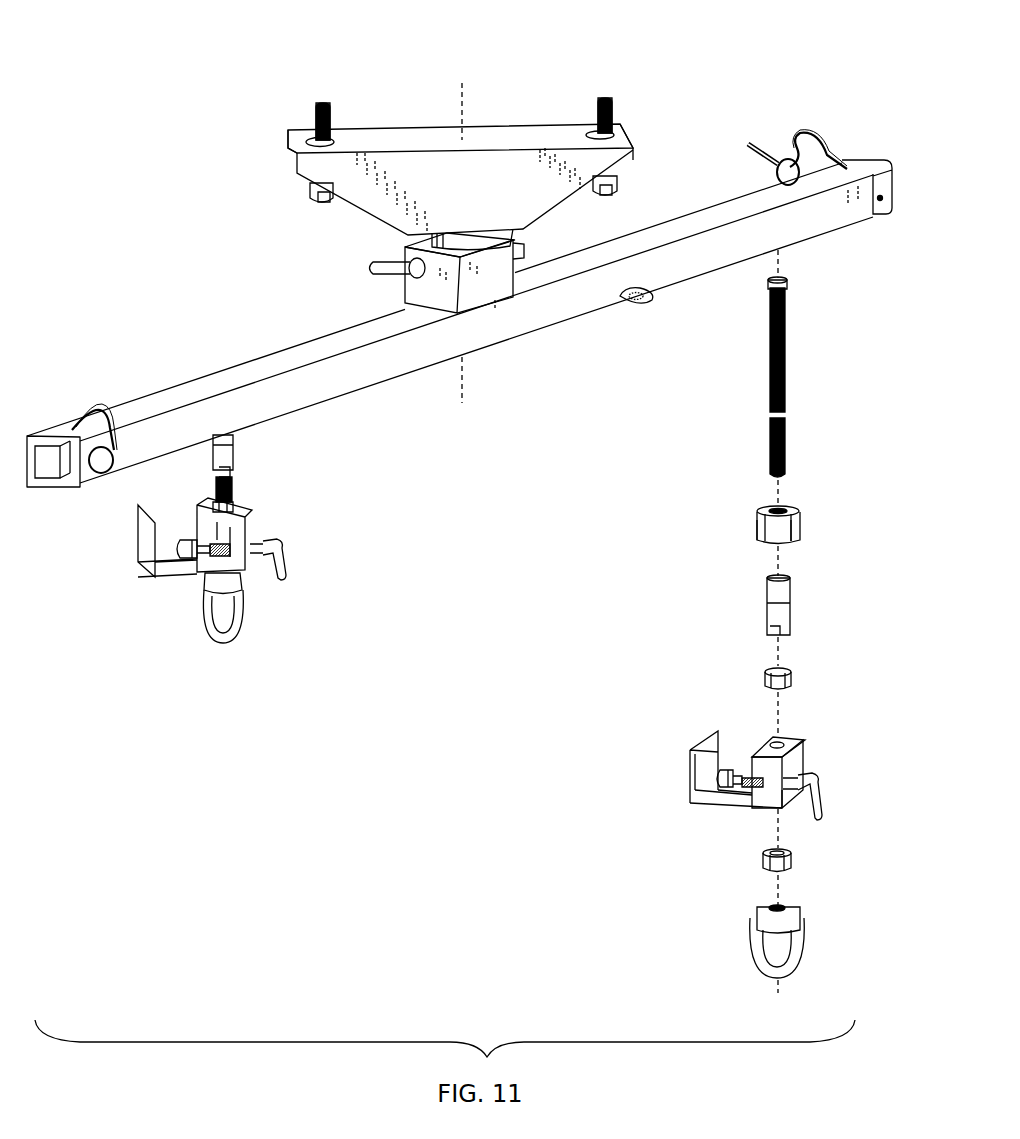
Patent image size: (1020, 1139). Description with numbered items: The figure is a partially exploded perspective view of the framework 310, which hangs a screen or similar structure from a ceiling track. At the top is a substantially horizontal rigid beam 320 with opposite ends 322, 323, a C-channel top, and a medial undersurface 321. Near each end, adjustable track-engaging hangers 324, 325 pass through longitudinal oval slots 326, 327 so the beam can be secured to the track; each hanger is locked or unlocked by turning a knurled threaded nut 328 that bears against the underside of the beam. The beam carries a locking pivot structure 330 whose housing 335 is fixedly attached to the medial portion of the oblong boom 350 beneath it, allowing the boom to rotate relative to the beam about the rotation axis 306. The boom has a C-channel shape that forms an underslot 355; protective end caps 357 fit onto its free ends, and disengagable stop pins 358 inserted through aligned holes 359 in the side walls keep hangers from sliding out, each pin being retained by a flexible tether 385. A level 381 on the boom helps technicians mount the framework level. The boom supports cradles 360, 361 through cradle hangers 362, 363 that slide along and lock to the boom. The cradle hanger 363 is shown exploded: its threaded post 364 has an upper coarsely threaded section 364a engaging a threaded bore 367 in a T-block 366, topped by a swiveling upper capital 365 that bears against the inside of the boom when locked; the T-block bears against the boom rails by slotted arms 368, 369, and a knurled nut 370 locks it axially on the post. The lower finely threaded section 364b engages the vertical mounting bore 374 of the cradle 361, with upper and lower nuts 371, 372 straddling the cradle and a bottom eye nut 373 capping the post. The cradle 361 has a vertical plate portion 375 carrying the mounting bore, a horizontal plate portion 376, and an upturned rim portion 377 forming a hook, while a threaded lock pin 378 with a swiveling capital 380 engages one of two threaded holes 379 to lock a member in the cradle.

The framework 310 is at (72, 142).
The rotation axis 306 is at (458, 90).
The beam 320 is at (460, 237).
The medial undersurface 321 is at (462, 230).
The end 322 is at (290, 146).
The end 323 is at (636, 146).
The track-engaging hanger 324 is at (333, 108).
The track-engaging hanger 325 is at (614, 104).
The oval slot 326 is at (306, 131).
The oval slot 327 is at (604, 124).
The knurled threaded nut 328 is at (308, 196).
The locking pivot structure 330 is at (425, 313).
The housing 335 is at (486, 292).
The boom 350 is at (276, 356).
The underslot 355 is at (447, 313).
The end cap 357 is at (40, 432).
The stop pin 358 is at (440, 308).
The aligned holes 359 is at (882, 202).
The cradle 360 is at (138, 560).
The cradle 361 is at (757, 777).
The cradle hanger 362 is at (210, 539).
The cradle hanger 363 is at (757, 621).
The threaded post 364 is at (790, 382).
The upper coarsely threaded section 364a is at (792, 346).
The lower finely threaded section 364b is at (792, 428).
The swiveling upper capital 365 is at (790, 284).
The T-block 366 is at (796, 509).
The threaded bore 367 is at (781, 516).
The slotted arm 368 is at (757, 540).
The slotted arm 369 is at (806, 540).
The knurled nut 370 is at (794, 606).
The upper nut 371 is at (796, 678).
The lower nut 372 is at (794, 860).
The bottom eye nut 373 is at (804, 944).
The mounting bore 374 is at (786, 745).
The vertical plate portion 375 is at (820, 755).
The horizontal plate portion 376 is at (732, 808).
The rim portion 377 is at (706, 736).
The threaded lock pin 378 is at (826, 790).
The threaded holes 379 is at (793, 802).
The swiveling capital 380 is at (736, 768).
The level 381 is at (650, 302).
The flexible tether 385 is at (100, 412).